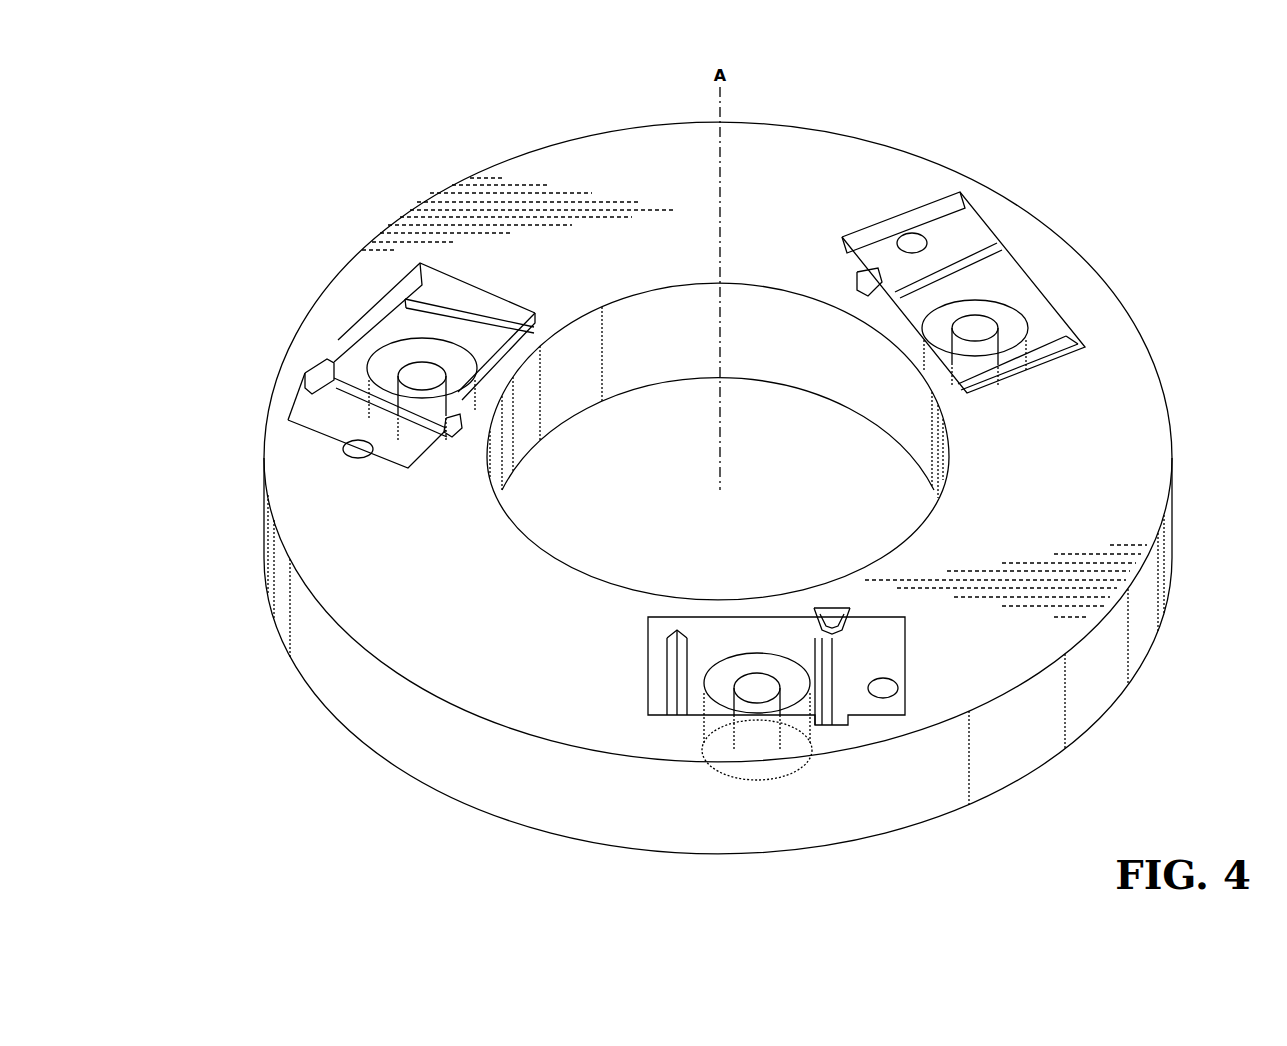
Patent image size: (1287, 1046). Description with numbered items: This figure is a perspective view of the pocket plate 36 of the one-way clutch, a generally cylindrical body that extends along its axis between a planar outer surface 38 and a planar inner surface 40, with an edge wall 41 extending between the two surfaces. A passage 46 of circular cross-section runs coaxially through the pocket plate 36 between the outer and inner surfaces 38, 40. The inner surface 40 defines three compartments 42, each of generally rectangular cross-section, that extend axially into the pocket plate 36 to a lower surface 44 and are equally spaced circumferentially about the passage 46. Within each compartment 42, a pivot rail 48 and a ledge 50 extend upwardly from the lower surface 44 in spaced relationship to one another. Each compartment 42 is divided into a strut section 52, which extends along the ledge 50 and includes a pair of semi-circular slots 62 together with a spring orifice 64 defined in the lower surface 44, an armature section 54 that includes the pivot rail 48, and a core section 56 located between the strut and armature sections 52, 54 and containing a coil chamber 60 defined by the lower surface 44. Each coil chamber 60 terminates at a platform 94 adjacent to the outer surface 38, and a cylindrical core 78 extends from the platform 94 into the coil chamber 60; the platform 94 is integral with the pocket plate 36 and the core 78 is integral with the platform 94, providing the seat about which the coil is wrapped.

The pocket plate 36 is at (357, 690).
The outer surface 38 is at (590, 843).
The inner surface 40 is at (512, 716).
The edge wall 41 is at (1102, 673).
The compartment 42 is at (693, 459).
The lower surface 44 is at (391, 335).
The passage 46 is at (782, 367).
The pivot rail 48 is at (418, 313).
The ledge 50 is at (334, 370).
The strut section 52 is at (329, 418).
The armature section 54 is at (460, 313).
The core section 56 is at (358, 370).
The coil chamber 60 is at (451, 357).
The slot 62 is at (432, 443).
The spring orifice 64 is at (357, 447).
The core 78 is at (418, 404).
The platform 94 is at (462, 376).